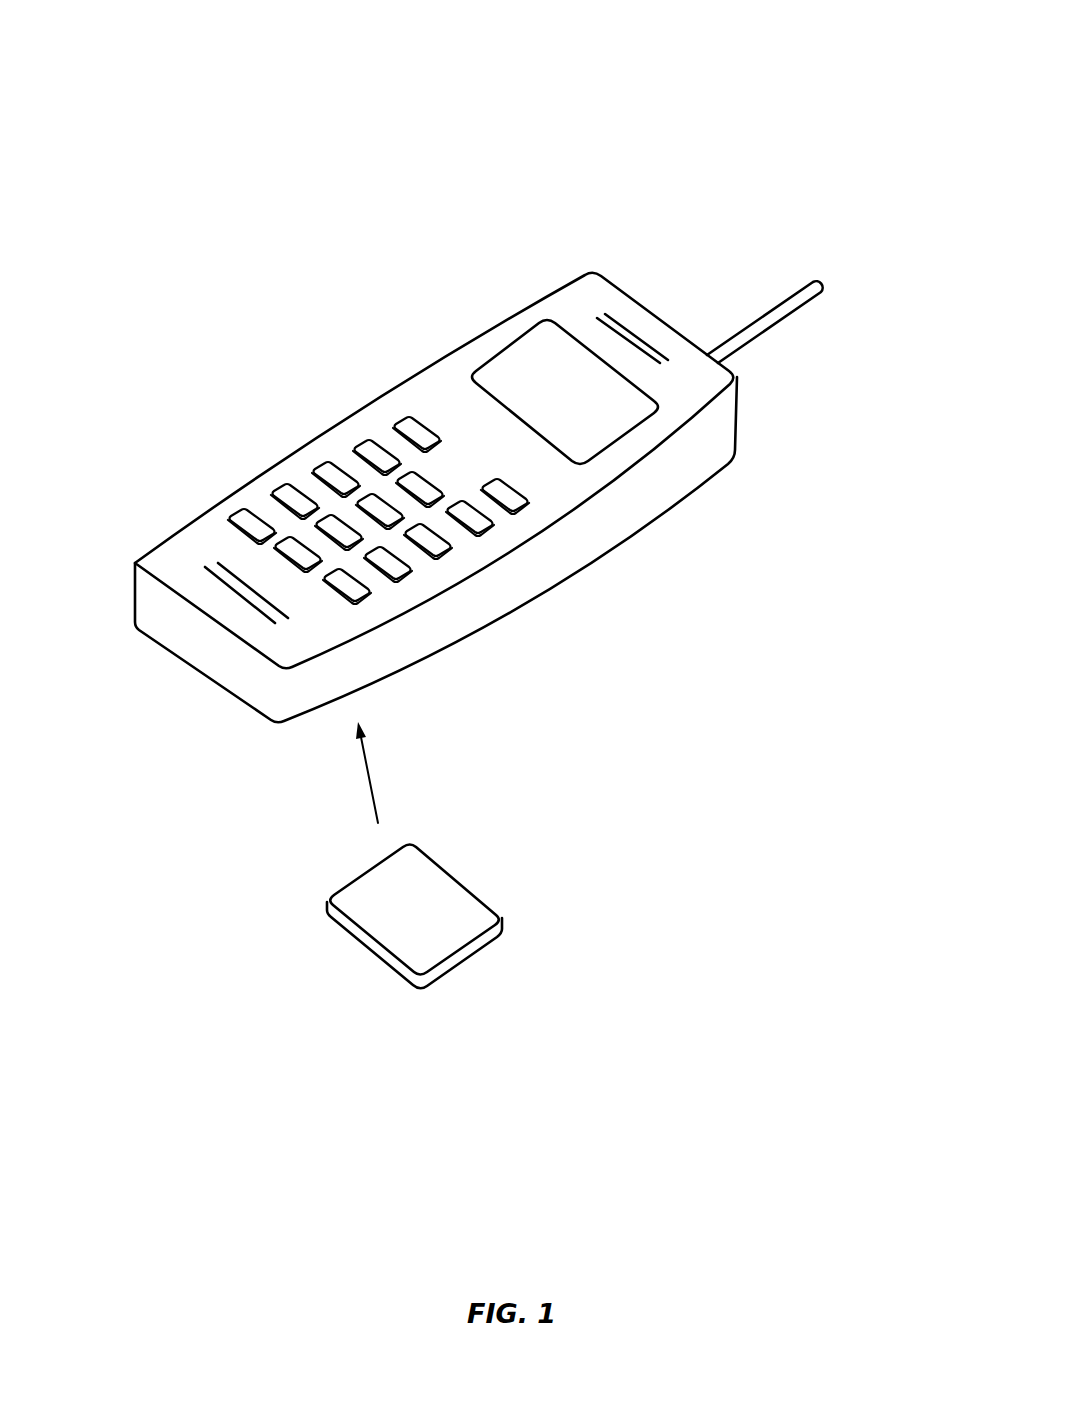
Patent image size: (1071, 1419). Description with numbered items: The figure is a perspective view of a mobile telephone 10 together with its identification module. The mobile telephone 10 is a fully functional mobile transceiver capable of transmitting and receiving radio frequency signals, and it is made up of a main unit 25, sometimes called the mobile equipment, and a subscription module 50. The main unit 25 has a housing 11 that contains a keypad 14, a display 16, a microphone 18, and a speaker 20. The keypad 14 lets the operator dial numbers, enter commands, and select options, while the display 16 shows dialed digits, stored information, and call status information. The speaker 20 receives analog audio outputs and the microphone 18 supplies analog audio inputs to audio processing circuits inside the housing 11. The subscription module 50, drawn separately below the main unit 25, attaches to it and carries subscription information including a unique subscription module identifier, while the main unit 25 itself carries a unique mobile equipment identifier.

The mobile telephone 10 is at (676, 143).
The housing 11 is at (225, 495).
The keypad 14 is at (440, 571).
The display 16 is at (552, 368).
The microphone 18 is at (230, 590).
The speaker 20 is at (643, 347).
The main unit 25 is at (245, 424).
The subscription module 50 is at (478, 863).